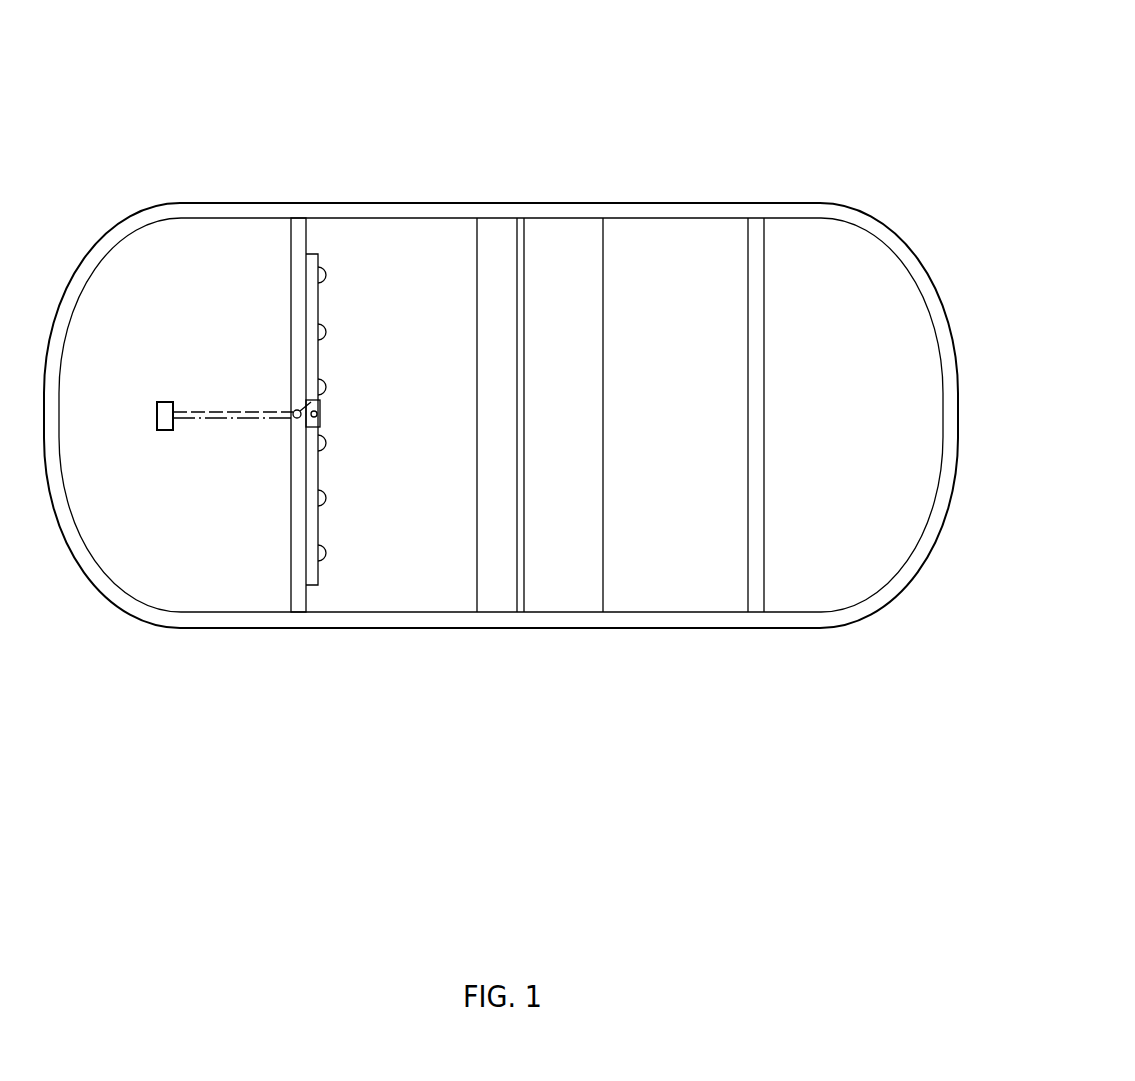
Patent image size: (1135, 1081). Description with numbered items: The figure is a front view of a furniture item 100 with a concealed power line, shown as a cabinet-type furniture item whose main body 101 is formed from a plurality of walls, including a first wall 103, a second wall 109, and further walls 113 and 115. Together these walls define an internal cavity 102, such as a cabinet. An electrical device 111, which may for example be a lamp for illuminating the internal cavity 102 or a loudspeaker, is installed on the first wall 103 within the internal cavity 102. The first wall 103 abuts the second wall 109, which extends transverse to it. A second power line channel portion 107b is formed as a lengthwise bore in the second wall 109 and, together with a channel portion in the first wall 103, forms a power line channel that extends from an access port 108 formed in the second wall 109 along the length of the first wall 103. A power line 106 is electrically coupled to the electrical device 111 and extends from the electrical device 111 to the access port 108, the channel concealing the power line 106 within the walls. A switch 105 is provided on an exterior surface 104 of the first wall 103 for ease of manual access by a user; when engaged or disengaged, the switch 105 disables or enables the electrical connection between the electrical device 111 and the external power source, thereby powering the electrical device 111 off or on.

The furniture item 100 is at (730, 99).
The main body 101 is at (327, 173).
The internal cavity 102 is at (420, 493).
The first wall 103 is at (297, 465).
The exterior surface 104 is at (306, 536).
The switch 105 is at (313, 427).
The power line 106 is at (302, 411).
The second power line channel portion 107b is at (207, 408).
The access port 108 is at (157, 408).
The second wall 109 is at (428, 415).
The electrical device 111 is at (316, 337).
The wall 113 is at (452, 203).
The wall 115 is at (327, 628).